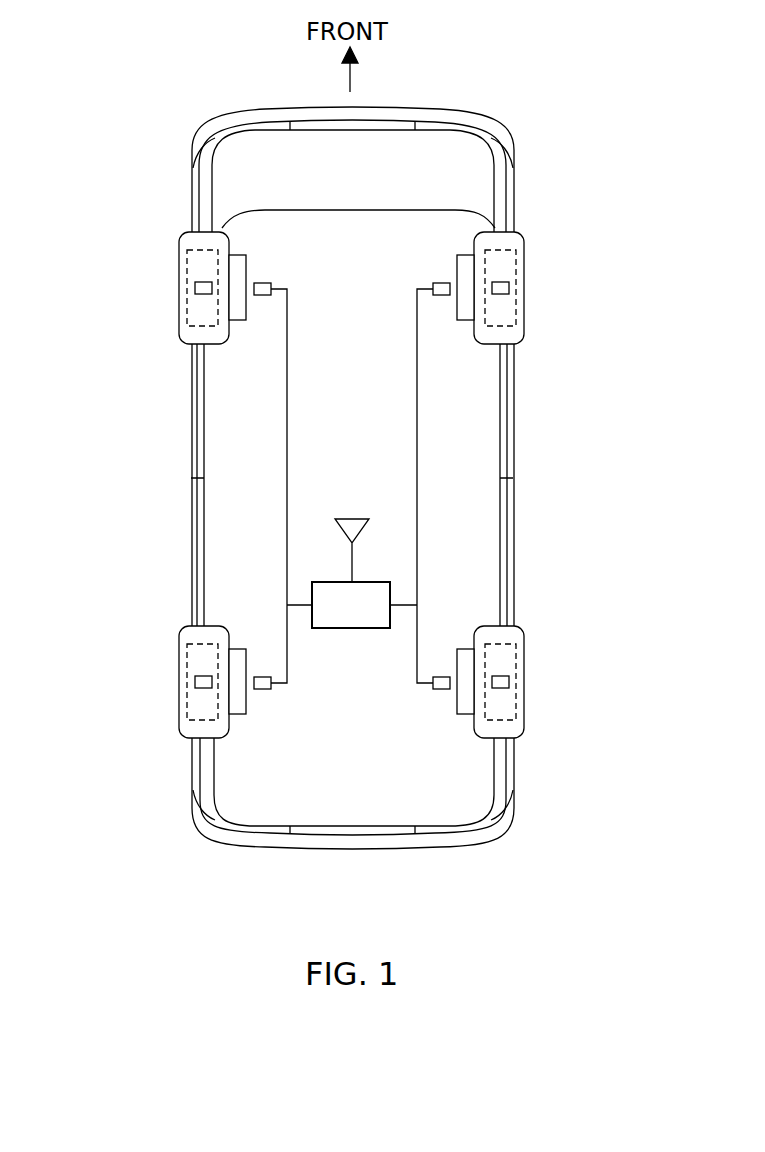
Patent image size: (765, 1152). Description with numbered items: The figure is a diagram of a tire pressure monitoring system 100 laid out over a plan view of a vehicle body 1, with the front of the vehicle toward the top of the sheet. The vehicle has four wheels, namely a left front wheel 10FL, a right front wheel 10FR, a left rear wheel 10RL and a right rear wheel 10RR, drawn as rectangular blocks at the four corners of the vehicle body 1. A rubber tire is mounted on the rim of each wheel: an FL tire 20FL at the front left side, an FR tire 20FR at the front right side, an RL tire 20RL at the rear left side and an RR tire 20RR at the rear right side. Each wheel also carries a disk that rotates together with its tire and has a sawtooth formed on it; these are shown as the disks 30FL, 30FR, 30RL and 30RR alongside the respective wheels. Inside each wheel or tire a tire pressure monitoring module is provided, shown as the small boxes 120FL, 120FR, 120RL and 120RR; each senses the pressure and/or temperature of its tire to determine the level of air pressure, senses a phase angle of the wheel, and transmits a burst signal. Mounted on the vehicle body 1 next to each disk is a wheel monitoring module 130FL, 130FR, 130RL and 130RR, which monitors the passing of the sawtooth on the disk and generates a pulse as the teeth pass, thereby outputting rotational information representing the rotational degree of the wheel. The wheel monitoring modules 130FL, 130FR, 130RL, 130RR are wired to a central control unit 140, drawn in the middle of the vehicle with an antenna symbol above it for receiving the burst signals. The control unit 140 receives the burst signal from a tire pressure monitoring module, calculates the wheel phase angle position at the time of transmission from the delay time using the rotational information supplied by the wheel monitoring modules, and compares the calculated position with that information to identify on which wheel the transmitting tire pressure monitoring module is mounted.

The tire pressure monitoring system 100 is at (212, 33).
The vehicle body 1 is at (505, 186).
The left front wheel 10FL is at (186, 265).
The right front wheel 10FR is at (518, 265).
The left rear wheel 10RL is at (187, 705).
The right rear wheel 10RR is at (517, 705).
The FL tire 20FL is at (182, 327).
The FR tire 20FR is at (525, 327).
The RL tire 20RL is at (181, 646).
The RR tire 20RR is at (525, 646).
The disk 30FL is at (237, 320).
The disk 30FR is at (467, 320).
The disk 30RL is at (237, 650).
The disk 30RR is at (467, 650).
The tire pressure monitoring module 120FL is at (196, 288).
The tire pressure monitoring module 120FR is at (509, 288).
The tire pressure monitoring module 120RL is at (196, 683).
The tire pressure monitoring module 120RR is at (509, 683).
The wheel monitoring module 130FL is at (263, 281).
The wheel monitoring module 130FR is at (441, 281).
The wheel monitoring module 130RL is at (263, 690).
The wheel monitoring module 130RR is at (441, 690).
The control unit 140 is at (352, 486).